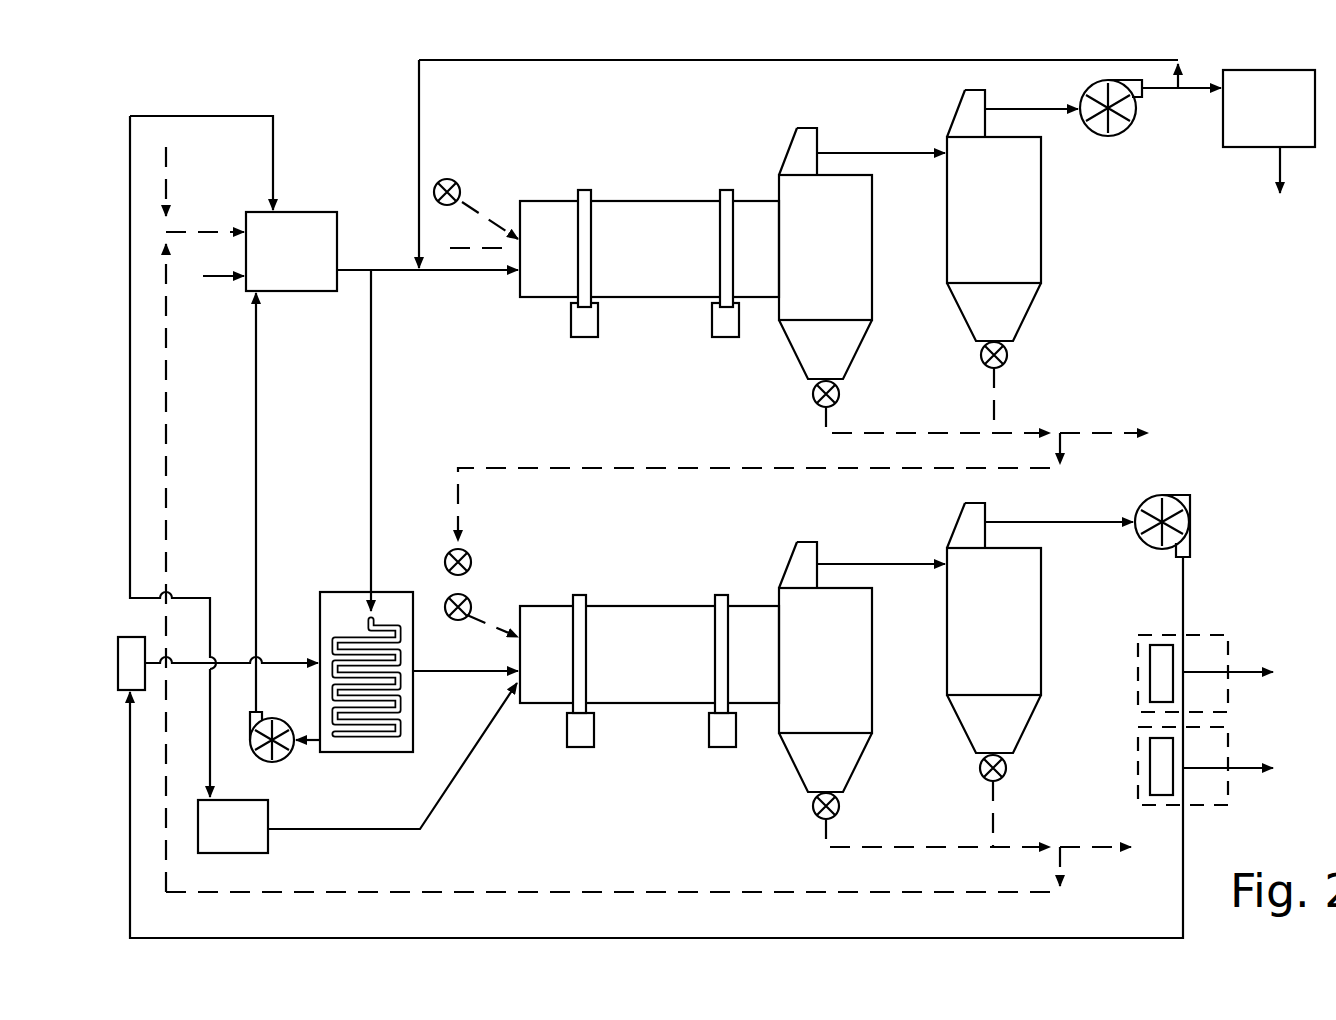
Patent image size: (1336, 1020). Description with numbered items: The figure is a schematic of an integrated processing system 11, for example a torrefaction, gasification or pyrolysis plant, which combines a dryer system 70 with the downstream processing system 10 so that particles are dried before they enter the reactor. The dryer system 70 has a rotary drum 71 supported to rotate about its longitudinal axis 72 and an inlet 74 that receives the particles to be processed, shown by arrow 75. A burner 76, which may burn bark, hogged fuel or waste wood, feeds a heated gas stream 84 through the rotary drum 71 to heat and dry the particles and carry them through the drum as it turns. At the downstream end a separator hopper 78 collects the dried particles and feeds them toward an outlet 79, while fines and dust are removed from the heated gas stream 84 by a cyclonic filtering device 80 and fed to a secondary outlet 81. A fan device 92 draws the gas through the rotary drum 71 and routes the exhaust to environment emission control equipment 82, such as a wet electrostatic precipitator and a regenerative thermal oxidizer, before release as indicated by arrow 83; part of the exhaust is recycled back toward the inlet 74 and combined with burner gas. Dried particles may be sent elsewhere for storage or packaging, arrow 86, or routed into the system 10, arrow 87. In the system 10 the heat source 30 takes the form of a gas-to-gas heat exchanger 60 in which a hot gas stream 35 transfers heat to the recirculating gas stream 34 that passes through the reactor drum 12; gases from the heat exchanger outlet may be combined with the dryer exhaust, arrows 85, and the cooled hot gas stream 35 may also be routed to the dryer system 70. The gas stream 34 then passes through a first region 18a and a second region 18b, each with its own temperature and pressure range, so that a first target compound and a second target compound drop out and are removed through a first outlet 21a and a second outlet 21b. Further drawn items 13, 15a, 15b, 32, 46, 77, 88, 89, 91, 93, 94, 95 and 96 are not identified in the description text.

The system 10 is at (669, 596).
The integrated processing system 11 is at (380, 113).
The reactor drum 12 is at (597, 606).
The mixing device 13 is at (118, 663).
The first filter unit 15a is at (1150, 675).
The second filter unit 15b is at (1150, 768).
The first region 18a is at (1197, 633).
The second region 18b is at (1190, 805).
The first outlet 21a is at (1243, 667).
The second outlet 21b is at (1243, 763).
The heat source 30 is at (336, 592).
The fan 32 is at (263, 716).
The recirculating gas stream 34 is at (493, 675).
The hot gas stream 35 is at (371, 480).
The solids discharge cone 46 is at (972, 322).
The gas-to-gas heat exchanger 60 is at (413, 718).
The dryer system 70 is at (665, 193).
The rotary drum 71 is at (600, 201).
The longitudinal axis 72 is at (462, 253).
The inlet 74 is at (522, 282).
The arrow representing particles fed to the inlet 75 is at (470, 207).
The burner 76 is at (312, 212).
The solids feed line 77 is at (166, 194).
The separator hopper 78 is at (872, 247).
The outlet 79 is at (828, 425).
The filtering device 80 is at (1041, 207).
The secondary outlet 81 is at (994, 388).
The environment emission control equipment 82 is at (1245, 148).
The arrow representing exhaust release 83 is at (1277, 170).
The heated gas stream 84 is at (530, 60).
The arrows representing gases from the heat exchanger outlet 85 is at (256, 318).
The arrow representing dried particle routing 86 is at (1105, 432).
The arrow representing dried particle feed 87 is at (458, 520).
The heat exchanger inlet 88 is at (371, 565).
The fuel supply line 89 is at (218, 280).
The feed line to gas conditioning unit 91 is at (273, 162).
The fan device 92 is at (1117, 133).
The gas supply unit 93 is at (257, 800).
The supply line 94 is at (211, 772).
The gas feed line to first kiln 95 is at (472, 760).
The branch line 96 is at (188, 598).